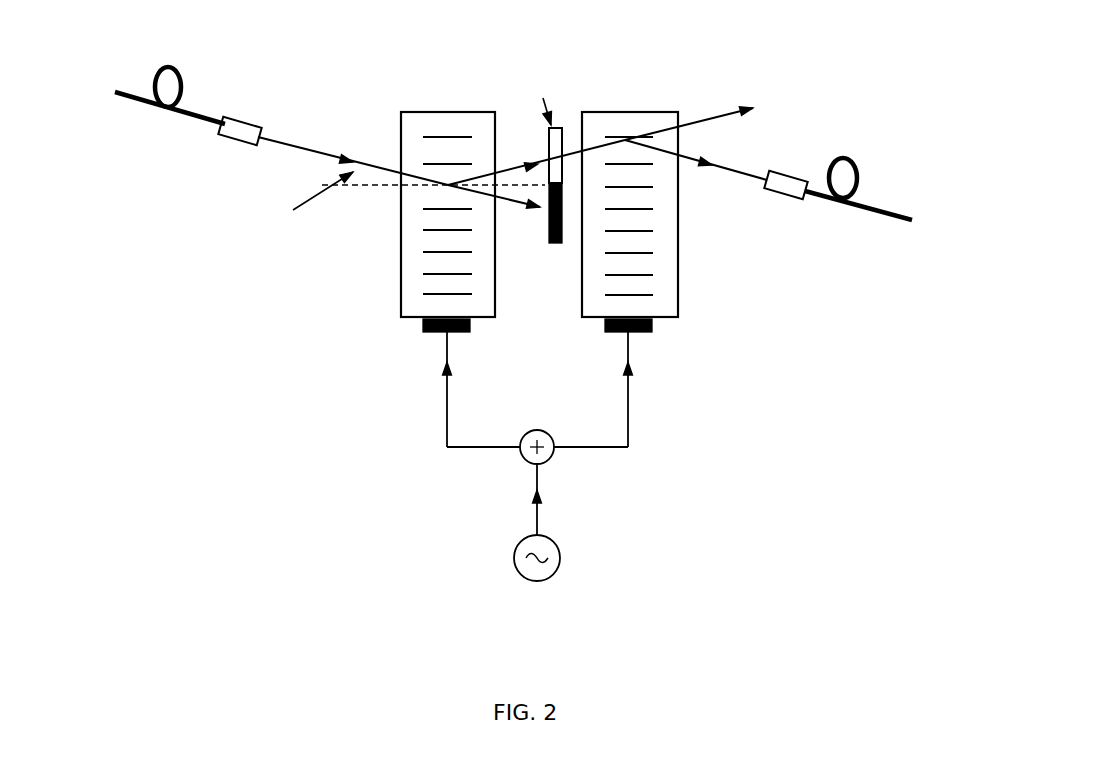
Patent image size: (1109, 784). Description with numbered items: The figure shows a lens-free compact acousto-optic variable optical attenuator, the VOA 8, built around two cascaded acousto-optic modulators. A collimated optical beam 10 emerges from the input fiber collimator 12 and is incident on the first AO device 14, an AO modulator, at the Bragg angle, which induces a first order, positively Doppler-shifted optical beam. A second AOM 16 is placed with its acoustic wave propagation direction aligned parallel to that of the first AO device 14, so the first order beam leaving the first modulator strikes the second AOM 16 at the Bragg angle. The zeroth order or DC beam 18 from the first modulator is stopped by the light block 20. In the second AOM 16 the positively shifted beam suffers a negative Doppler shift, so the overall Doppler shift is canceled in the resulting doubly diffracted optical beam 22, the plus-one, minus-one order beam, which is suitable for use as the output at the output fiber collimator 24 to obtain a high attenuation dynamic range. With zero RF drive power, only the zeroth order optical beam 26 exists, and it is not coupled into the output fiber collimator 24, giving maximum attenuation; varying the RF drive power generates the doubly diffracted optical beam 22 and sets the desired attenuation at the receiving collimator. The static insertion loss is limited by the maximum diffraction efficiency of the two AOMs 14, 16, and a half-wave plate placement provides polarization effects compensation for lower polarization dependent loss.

The VOA 8 is at (502, 38).
The collimated optical beam 10 is at (307, 140).
The input fiber collimator 12 is at (207, 123).
The first AO device 14 is at (408, 270).
The second AOM 16 is at (670, 280).
The DC beam 18 is at (543, 210).
The light block 20 is at (552, 245).
The +1,-1 optical beam 22 is at (733, 170).
The output fiber collimator 24 is at (867, 213).
The zeroth order optical beam 26 is at (747, 67).